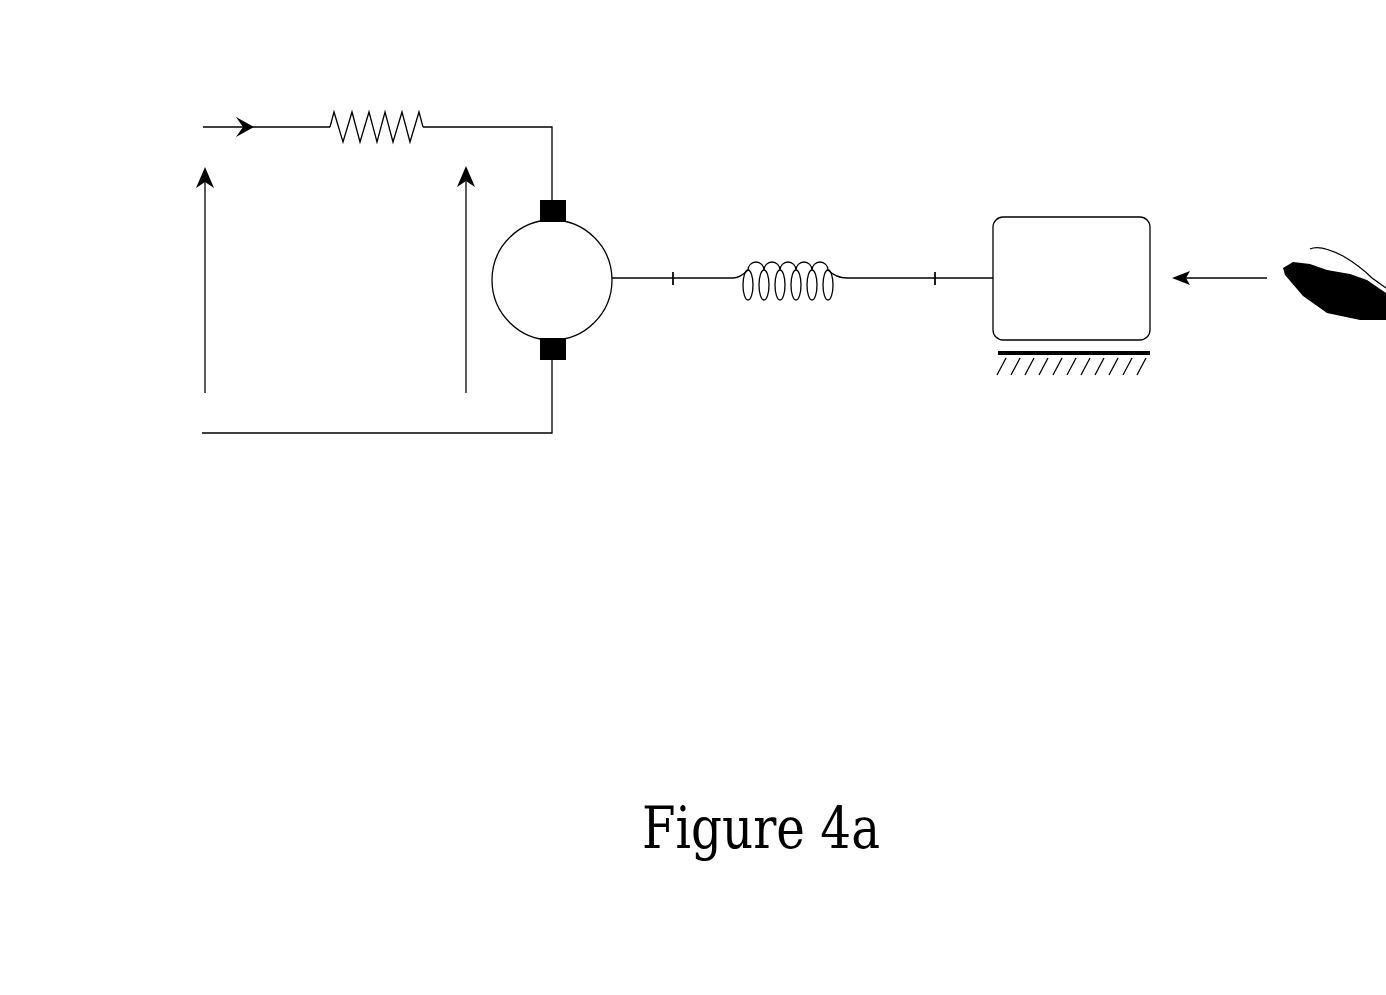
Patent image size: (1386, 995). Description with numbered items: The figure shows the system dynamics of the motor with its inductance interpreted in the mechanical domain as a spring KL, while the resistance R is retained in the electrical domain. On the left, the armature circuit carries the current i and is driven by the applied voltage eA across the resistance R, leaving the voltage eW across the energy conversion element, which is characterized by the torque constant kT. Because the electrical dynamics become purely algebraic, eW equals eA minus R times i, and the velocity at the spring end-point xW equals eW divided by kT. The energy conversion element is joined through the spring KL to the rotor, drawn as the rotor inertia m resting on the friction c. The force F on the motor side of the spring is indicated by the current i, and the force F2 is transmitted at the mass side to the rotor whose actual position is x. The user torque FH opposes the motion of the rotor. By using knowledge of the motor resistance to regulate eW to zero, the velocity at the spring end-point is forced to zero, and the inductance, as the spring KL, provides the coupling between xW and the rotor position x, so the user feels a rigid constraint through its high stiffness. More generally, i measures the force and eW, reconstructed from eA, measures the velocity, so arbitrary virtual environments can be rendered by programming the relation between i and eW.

The current i is at (245, 104).
The resistance R is at (376, 159).
The applied voltage eA is at (165, 280).
The voltage across the energy conversion element eW is at (440, 279).
The torque constant kT is at (552, 280).
The force F is at (675, 250).
The spring end-point position xW is at (672, 301).
The spring KL is at (790, 235).
The force F2 is at (937, 250).
The rotor position x is at (932, 301).
The rotor inertia m is at (1071, 278).
The friction c is at (1088, 387).
The user torque FH is at (1219, 252).